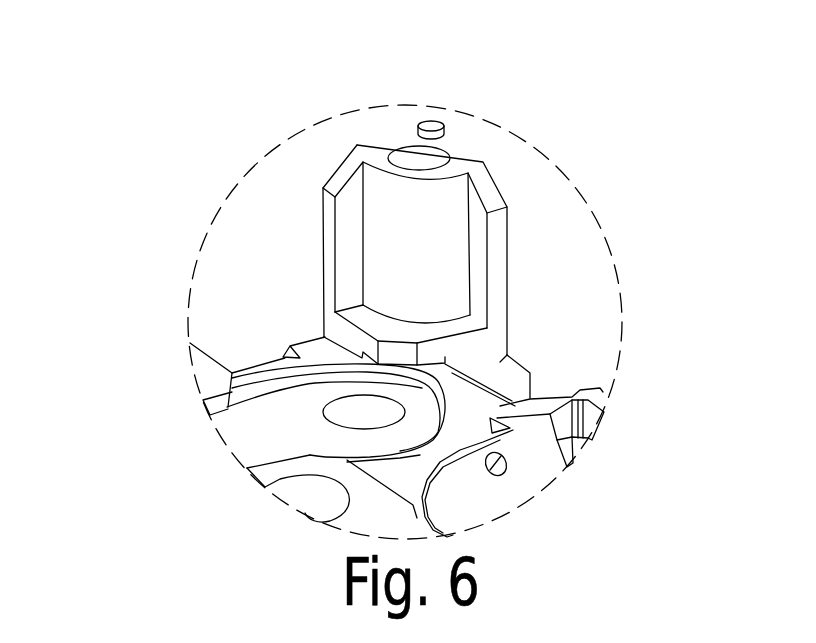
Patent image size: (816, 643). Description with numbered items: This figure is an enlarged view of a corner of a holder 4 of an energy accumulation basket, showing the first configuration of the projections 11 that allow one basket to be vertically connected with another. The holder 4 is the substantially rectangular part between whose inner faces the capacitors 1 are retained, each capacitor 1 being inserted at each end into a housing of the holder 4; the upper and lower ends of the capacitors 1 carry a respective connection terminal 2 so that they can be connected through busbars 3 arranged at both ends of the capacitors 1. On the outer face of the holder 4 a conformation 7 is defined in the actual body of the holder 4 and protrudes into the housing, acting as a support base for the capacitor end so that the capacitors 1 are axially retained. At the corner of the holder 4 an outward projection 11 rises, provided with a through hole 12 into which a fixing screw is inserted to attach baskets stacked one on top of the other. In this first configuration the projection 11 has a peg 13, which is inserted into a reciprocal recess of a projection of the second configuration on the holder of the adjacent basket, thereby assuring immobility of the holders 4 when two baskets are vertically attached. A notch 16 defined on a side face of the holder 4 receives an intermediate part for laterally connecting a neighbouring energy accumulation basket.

The capacitor 1 is at (450, 395).
The connection terminal 2 is at (365, 412).
The busbar 3 is at (262, 432).
The holder 4 is at (166, 301).
The conformation 7 is at (327, 462).
The projection 11 is at (420, 240).
The through hole 12 is at (412, 157).
The peg 13 is at (432, 127).
The notch 16 is at (605, 432).